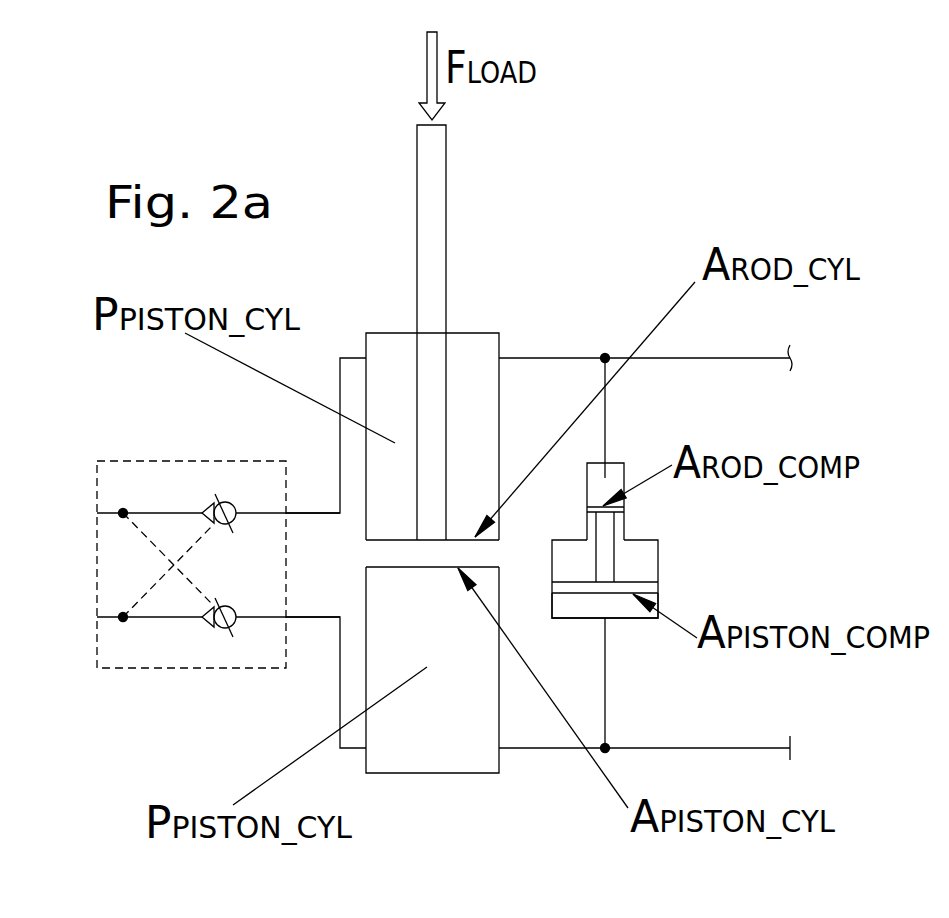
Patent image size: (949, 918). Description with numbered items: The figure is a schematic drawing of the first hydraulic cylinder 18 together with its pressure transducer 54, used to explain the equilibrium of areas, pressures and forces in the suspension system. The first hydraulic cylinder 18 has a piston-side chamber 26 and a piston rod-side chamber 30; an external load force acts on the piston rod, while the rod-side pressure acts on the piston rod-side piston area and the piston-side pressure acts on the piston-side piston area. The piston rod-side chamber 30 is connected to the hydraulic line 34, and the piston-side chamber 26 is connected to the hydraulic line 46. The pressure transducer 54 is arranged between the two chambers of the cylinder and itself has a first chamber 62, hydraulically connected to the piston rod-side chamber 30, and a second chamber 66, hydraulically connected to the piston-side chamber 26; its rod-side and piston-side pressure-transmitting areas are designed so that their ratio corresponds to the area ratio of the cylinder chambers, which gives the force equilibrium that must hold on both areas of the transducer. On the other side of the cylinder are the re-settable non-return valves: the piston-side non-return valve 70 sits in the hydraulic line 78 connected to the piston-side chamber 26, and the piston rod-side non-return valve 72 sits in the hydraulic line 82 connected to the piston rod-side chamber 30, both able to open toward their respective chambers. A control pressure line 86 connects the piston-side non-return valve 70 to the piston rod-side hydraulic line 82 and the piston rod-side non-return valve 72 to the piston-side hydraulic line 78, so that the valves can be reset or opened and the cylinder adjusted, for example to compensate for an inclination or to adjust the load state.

The first hydraulic cylinder 18 is at (468, 331).
The piston-side chamber 26 is at (410, 773).
The piston rod-side chamber 30 is at (392, 343).
The hydraulic line 34 is at (548, 357).
The hydraulic line 46 is at (550, 748).
The first pressure transducer 54 is at (660, 562).
The first chamber 62 is at (610, 476).
The second chamber 66 is at (628, 608).
The piston-side non-return valve 70 is at (227, 622).
The piston rod-side non-return valve 72 is at (227, 511).
The hydraulic line 78 is at (170, 619).
The hydraulic line 82 is at (170, 511).
The control pressure line 86 is at (142, 590).